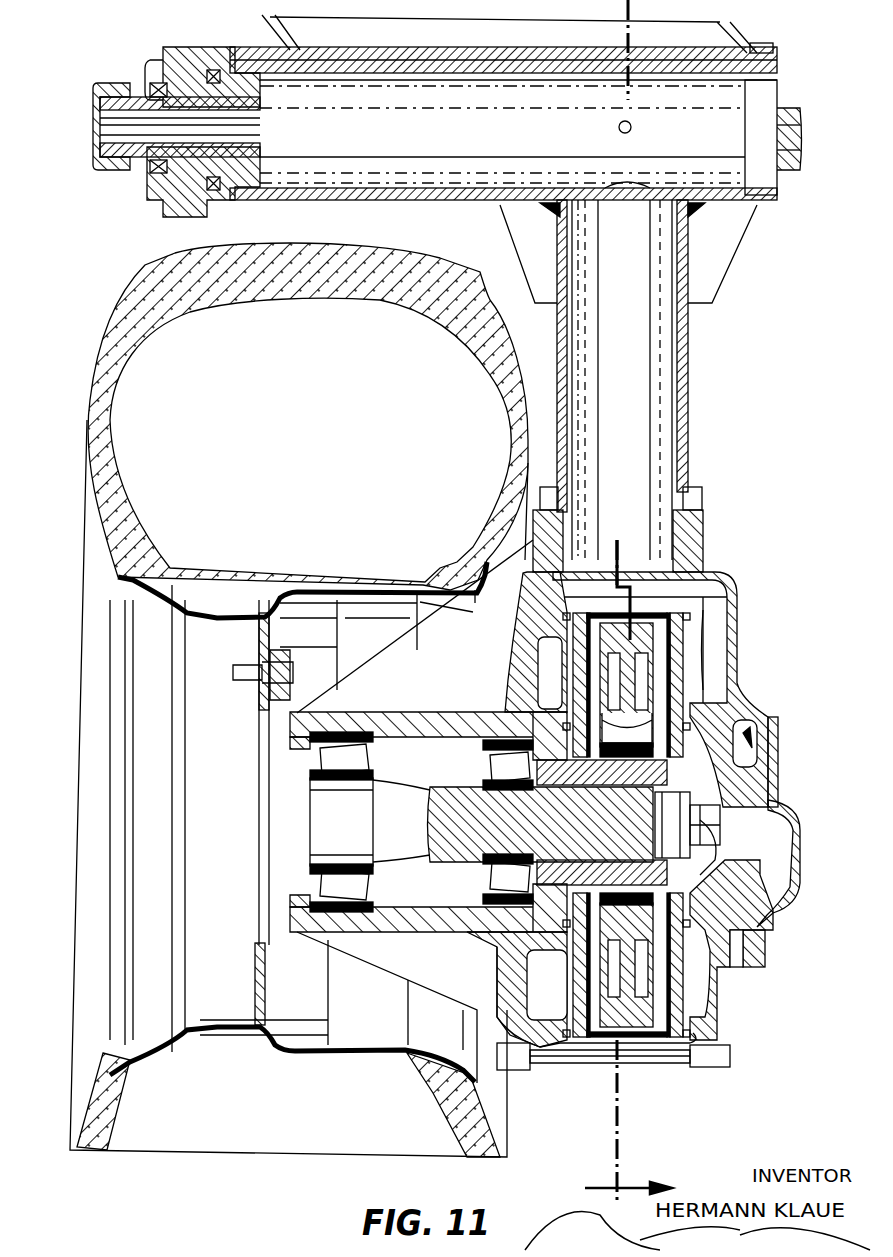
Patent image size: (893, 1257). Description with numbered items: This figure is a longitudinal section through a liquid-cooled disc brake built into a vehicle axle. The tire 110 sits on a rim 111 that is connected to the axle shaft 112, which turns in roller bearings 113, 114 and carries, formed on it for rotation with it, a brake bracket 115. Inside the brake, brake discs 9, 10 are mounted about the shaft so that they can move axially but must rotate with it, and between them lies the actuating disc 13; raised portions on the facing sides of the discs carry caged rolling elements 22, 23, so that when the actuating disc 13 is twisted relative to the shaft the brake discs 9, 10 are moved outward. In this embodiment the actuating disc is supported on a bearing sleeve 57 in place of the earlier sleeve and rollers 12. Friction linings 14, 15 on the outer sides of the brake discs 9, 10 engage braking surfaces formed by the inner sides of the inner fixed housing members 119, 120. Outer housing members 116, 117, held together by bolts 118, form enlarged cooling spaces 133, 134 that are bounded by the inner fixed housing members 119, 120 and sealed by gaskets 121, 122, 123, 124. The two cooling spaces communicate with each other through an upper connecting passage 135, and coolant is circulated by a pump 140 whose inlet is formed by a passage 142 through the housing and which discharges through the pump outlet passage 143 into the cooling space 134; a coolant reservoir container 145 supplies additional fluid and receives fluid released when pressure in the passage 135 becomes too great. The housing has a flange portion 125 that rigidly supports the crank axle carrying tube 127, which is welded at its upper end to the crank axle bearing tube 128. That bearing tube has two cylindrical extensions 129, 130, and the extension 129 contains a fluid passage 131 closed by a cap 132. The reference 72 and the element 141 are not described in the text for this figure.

The brake disc 9 is at (595, 1065).
The brake disc 10 is at (648, 1065).
The rollers 12 is at (616, 1122).
The actuating disc 13 is at (617, 1085).
The friction lining 14 is at (587, 1002).
The friction lining 15 is at (723, 977).
The rolling elements 22 is at (555, 690).
The rolling elements 23 is at (642, 680).
The bearing sleeve 57 is at (613, 678).
The fluid passage 72 is at (645, 560).
The tire 110 is at (183, 290).
The rim 111 is at (297, 1047).
The axle shaft 112 is at (340, 822).
The roller bearing 113 is at (345, 752).
The roller bearing 114 is at (512, 757).
The brake bracket 115 is at (648, 775).
The outer housing member 116 is at (481, 722).
The outer housing member 117 is at (723, 993).
The bolts 118 is at (730, 1075).
The inner fixed housing member 119 is at (572, 967).
The inner fixed housing member 120 is at (668, 1003).
The gasket 121 is at (566, 712).
The gasket 122 is at (478, 548).
The gasket 123 is at (762, 930).
The gasket 124 is at (675, 1065).
The flange portion 125 is at (695, 553).
The crank axle carrying tube 127 is at (688, 386).
The crank axle bearing tube 128 is at (720, 217).
The cylindrical extension 129 is at (150, 95).
The cylindrical extension 130 is at (747, 217).
The passage 131 is at (138, 127).
The cap 132 is at (93, 135).
The cooling space 133 is at (535, 657).
The cooling space 134 is at (718, 653).
The upper connecting passage 135 is at (665, 587).
The pump 140 is at (750, 830).
The cover plate 141 is at (767, 858).
The passage 142 is at (737, 948).
The pump outlet passage 143 is at (742, 745).
The coolant reservoir container 145 is at (370, 28).